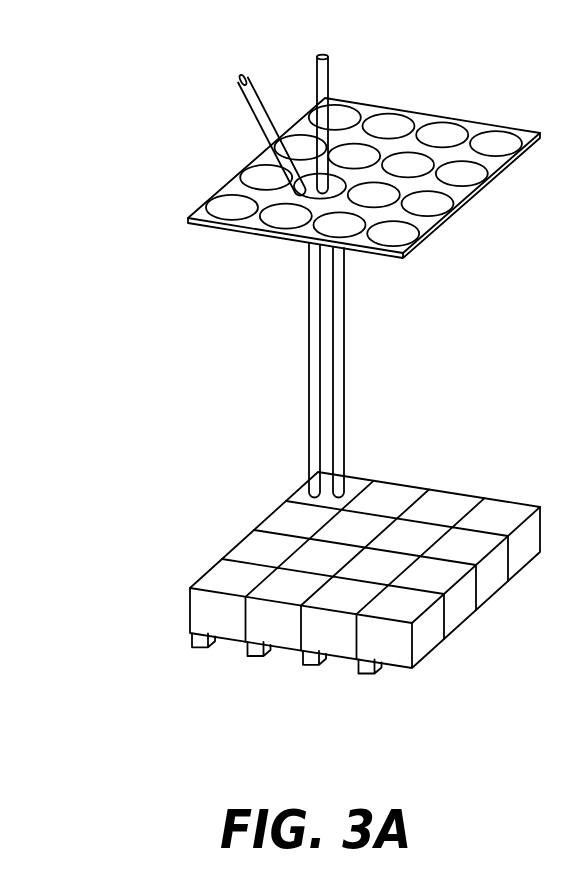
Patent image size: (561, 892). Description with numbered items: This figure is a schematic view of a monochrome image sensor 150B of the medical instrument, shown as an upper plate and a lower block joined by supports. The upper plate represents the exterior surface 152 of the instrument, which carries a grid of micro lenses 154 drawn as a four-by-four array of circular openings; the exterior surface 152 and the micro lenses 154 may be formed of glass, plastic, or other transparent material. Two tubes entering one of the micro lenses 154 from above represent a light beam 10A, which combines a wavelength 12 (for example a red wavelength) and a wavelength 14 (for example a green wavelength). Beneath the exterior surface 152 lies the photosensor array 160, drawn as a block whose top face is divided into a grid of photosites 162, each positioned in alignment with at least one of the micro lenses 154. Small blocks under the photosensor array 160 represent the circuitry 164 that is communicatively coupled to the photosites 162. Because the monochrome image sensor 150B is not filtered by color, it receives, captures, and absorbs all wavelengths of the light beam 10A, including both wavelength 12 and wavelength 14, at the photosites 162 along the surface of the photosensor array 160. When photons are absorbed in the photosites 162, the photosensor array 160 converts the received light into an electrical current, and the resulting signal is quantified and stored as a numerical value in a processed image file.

The light beam 10A is at (233, 79).
The wavelength 12 is at (254, 79).
The wavelength 14 is at (330, 62).
The monochrome image sensor 150B is at (170, 318).
The exterior surface 152 is at (207, 185).
The micro lenses 154 is at (418, 168).
The photosensor array 160 is at (218, 538).
The photosites 162 is at (418, 532).
The circuitry 164 is at (192, 637).